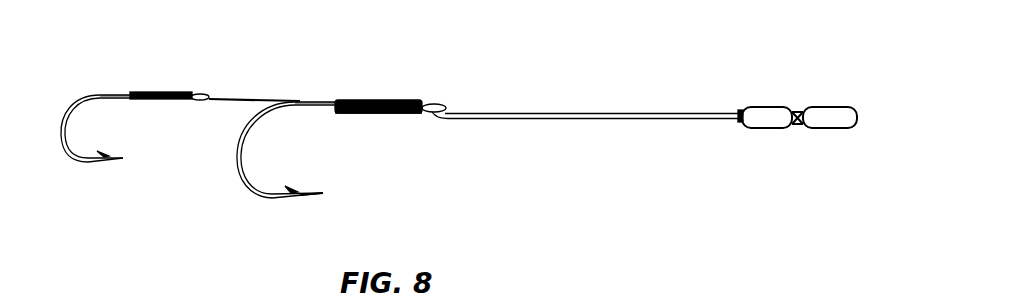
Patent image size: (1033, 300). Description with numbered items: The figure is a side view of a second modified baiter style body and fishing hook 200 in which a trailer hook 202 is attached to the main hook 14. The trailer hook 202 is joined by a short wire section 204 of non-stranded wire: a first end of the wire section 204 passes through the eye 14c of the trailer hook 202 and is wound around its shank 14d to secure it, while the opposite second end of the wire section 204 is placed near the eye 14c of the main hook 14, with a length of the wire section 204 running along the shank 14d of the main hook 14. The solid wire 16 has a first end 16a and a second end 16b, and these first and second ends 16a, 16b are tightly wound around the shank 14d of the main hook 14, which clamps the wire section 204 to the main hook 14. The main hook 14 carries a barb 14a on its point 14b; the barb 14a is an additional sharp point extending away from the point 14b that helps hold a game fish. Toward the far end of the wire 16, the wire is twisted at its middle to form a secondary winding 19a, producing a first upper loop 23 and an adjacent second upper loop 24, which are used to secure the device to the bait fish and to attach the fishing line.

The second modified baiter style body and fishing hook 200 is at (672, 50).
The trailer hook 202 is at (82, 164).
The wire section 204 is at (245, 98).
The main hook 14 is at (428, 172).
The barb 14a is at (106, 155).
The point 14b is at (319, 198).
The eye 14c is at (203, 94).
The shank 14d is at (113, 93).
The solid wire 16 is at (547, 110).
The first end 16a is at (341, 100).
The second end 16b is at (349, 114).
The first upper loop 23 is at (757, 130).
The second upper loop 24 is at (826, 106).
The secondary winding 19a is at (800, 130).